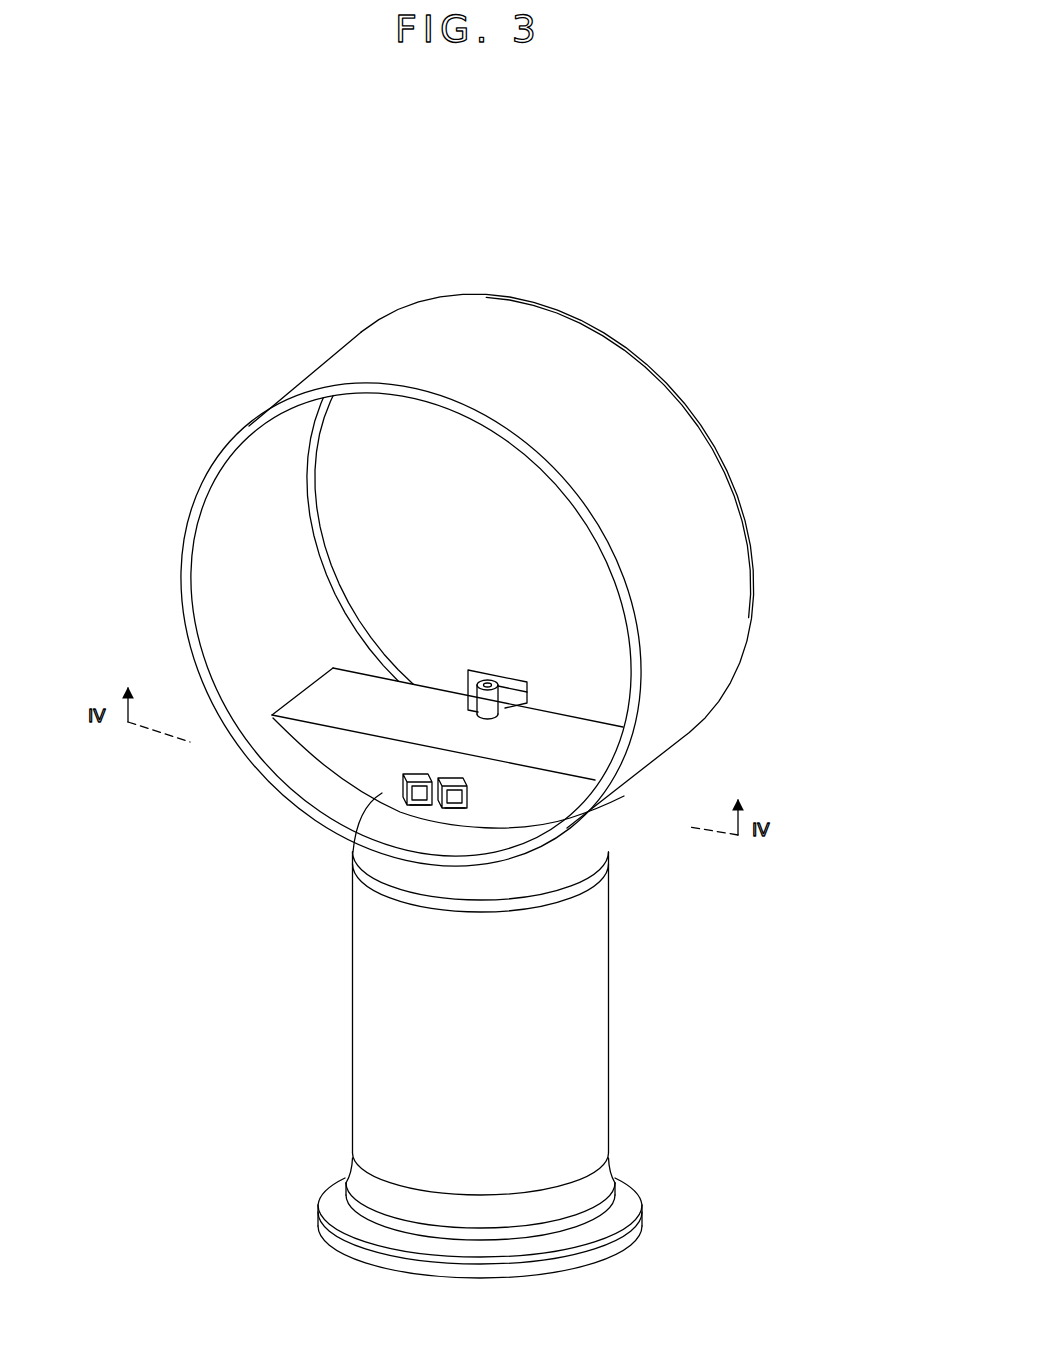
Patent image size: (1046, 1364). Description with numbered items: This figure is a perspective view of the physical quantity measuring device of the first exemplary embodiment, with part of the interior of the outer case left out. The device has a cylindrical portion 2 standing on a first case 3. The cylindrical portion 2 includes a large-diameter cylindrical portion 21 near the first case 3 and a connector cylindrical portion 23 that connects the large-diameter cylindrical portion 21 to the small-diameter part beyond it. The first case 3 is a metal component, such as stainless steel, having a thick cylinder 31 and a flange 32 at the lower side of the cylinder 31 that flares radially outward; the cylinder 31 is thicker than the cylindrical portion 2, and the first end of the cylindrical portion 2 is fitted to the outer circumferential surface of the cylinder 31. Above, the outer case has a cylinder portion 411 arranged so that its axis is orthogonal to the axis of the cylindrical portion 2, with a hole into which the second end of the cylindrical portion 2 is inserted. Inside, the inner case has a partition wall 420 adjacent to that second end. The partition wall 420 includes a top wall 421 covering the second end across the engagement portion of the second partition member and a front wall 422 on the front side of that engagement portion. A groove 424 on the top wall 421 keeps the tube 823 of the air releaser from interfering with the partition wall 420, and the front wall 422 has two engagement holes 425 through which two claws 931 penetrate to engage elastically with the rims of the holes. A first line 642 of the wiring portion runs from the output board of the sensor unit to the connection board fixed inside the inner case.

The cylindrical portion 2 is at (527, 991).
The first case 3 is at (491, 1201).
The large-diameter cylindrical portion 21 is at (598, 1060).
The connector cylindrical portion 23 is at (585, 845).
The cylinder 31 is at (362, 1178).
The flange 32 is at (355, 1217).
The cylinder portion 411 is at (690, 462).
The partition wall 420 is at (330, 745).
The top wall 421 is at (352, 692).
The front wall 422 is at (515, 800).
The groove 424 is at (468, 688).
The engagement holes 425 is at (407, 797).
The first line 642 is at (514, 690).
The tube 823 is at (487, 678).
The claws 931 is at (415, 780).